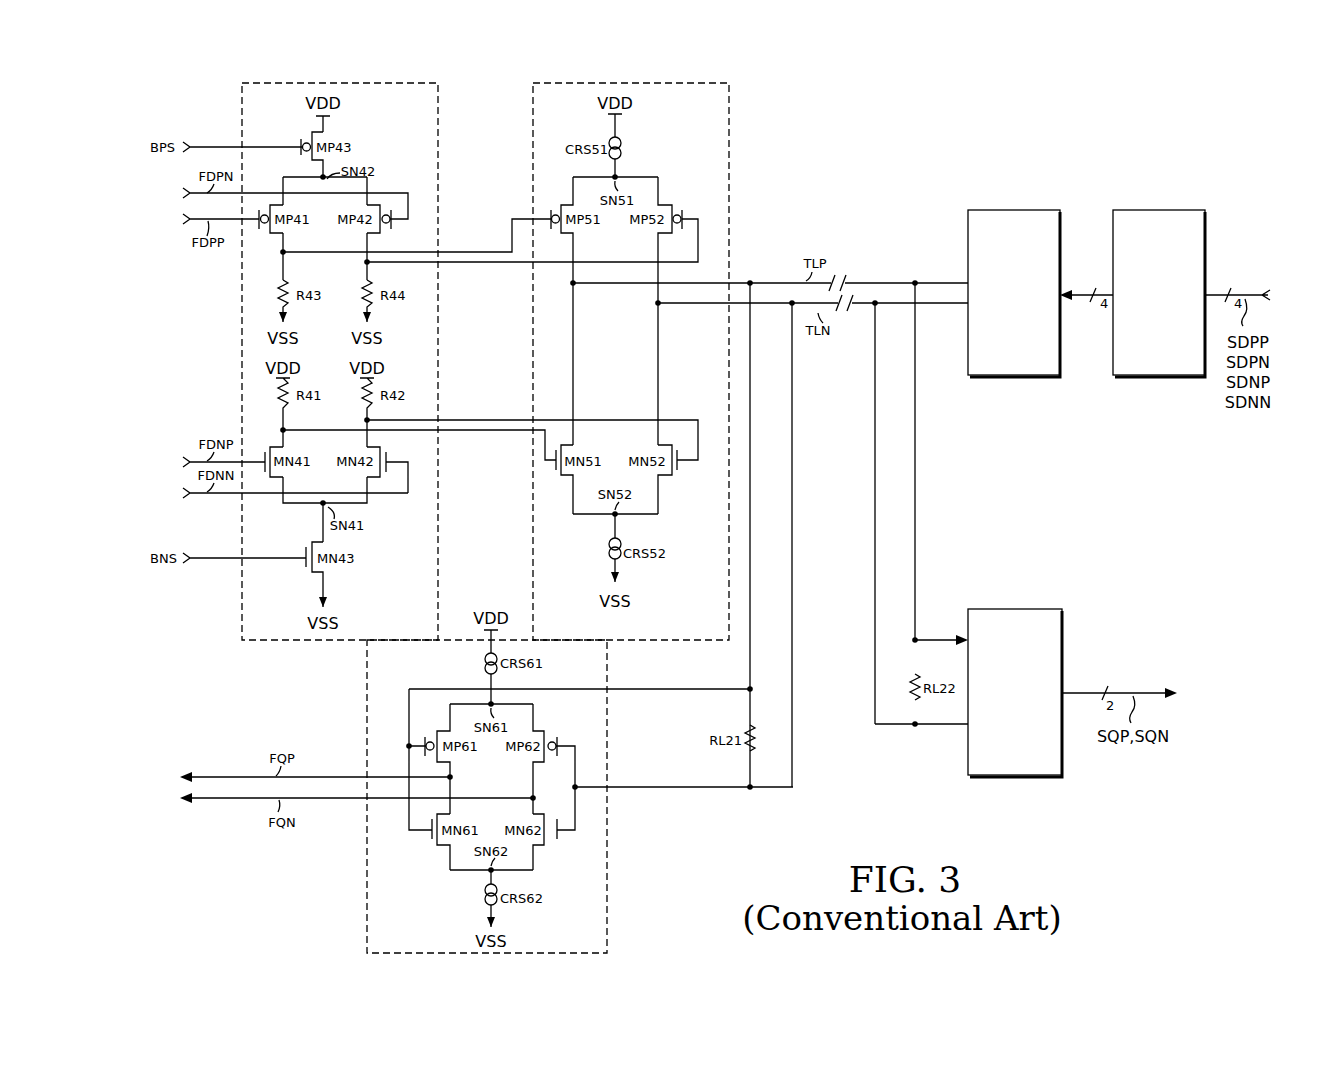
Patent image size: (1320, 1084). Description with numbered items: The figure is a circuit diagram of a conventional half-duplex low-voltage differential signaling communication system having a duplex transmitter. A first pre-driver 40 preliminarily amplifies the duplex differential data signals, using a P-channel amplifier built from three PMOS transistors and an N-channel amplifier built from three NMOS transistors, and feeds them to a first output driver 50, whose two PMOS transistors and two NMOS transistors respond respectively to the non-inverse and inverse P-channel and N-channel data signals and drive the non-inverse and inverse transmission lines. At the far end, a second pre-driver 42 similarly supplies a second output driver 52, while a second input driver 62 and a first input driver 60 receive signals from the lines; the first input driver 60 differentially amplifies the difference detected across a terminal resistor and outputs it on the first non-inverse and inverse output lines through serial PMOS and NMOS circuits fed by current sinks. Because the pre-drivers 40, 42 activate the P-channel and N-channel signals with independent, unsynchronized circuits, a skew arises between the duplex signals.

The first pre-driver 40 is at (345, 83).
The first output driver 50 is at (636, 83).
The first input driver 60 is at (607, 841).
The second output driver 52 is at (1009, 210).
The second pre-driver 42 is at (1154, 210).
The second input driver 62 is at (1009, 609).